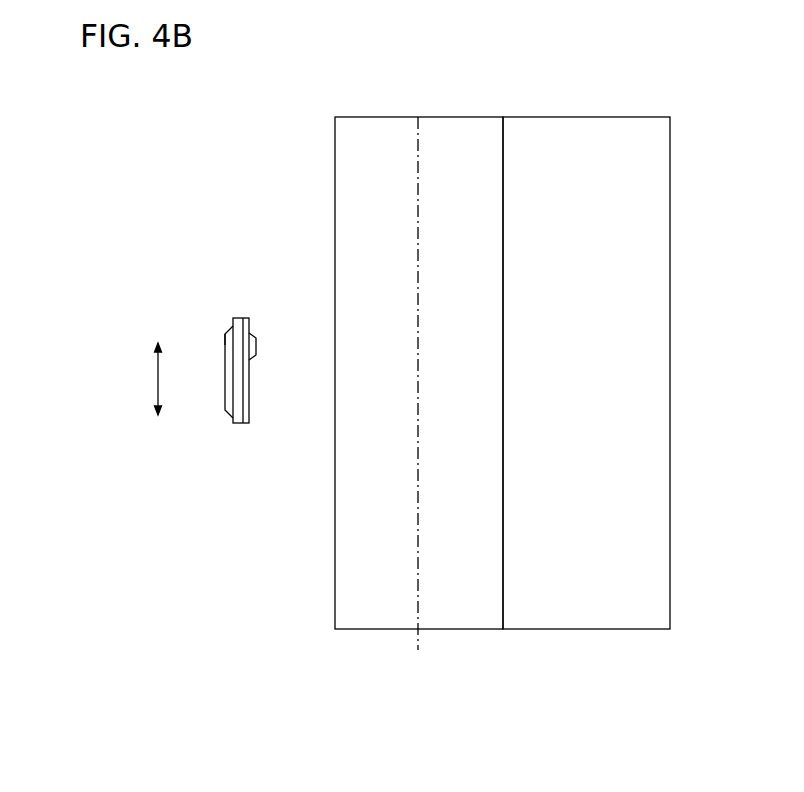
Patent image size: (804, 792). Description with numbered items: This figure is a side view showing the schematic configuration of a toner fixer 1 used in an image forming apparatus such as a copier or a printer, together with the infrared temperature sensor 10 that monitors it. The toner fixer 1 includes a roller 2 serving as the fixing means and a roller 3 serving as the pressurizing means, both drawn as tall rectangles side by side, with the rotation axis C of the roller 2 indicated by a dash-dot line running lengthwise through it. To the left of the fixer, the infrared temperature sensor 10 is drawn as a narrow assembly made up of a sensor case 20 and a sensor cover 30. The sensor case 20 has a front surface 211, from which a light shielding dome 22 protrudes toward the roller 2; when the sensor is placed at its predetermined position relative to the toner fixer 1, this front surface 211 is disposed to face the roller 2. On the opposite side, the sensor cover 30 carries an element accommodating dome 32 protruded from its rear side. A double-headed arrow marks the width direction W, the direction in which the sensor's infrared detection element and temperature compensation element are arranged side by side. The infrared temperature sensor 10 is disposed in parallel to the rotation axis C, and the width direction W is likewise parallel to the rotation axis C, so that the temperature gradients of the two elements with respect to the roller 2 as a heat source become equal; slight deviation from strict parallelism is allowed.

The toner fixer 1 is at (537, 368).
The roller 2 is at (438, 117).
The roller 3 is at (590, 117).
The infrared temperature sensor 10 is at (240, 366).
The sensor case 20 is at (273, 374).
The light shielding dome 22 is at (252, 334).
The sensor cover 30 is at (200, 388).
The element accommodating dome 32 is at (230, 333).
The front surface 211 is at (250, 402).
The rotation axis C is at (420, 640).
The width direction W is at (148, 379).